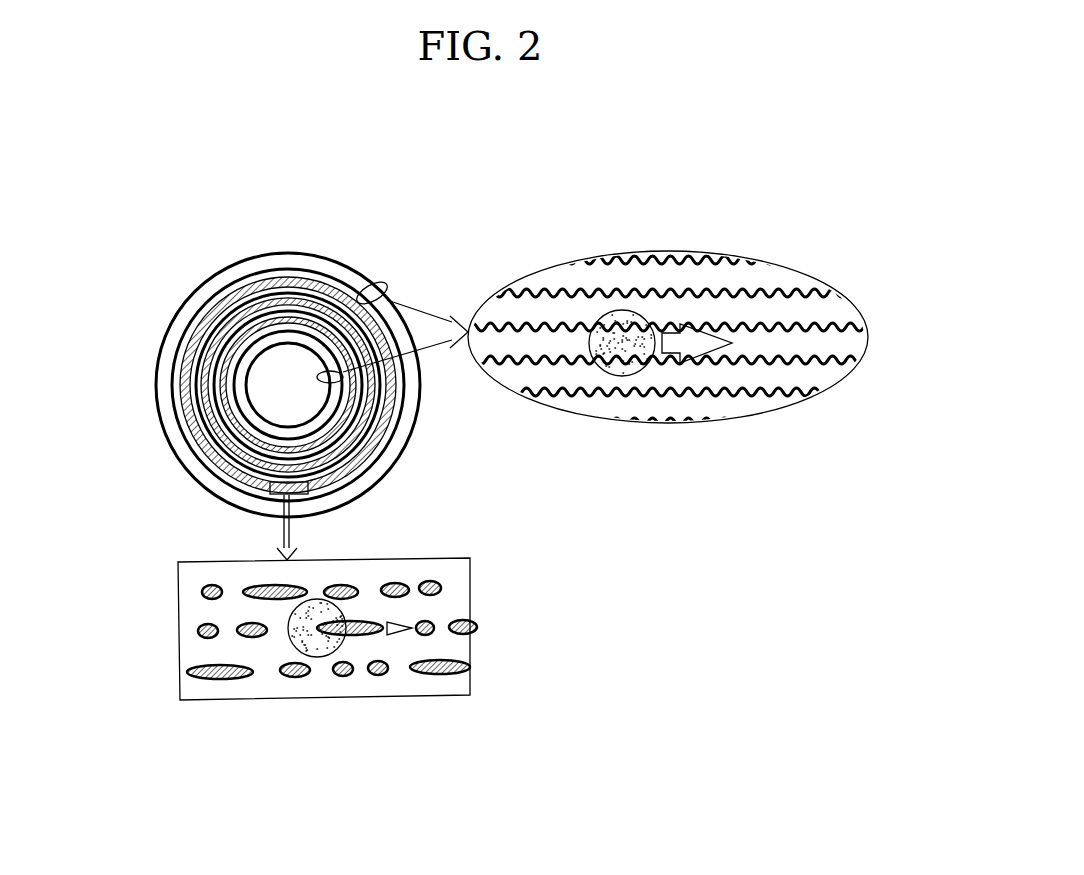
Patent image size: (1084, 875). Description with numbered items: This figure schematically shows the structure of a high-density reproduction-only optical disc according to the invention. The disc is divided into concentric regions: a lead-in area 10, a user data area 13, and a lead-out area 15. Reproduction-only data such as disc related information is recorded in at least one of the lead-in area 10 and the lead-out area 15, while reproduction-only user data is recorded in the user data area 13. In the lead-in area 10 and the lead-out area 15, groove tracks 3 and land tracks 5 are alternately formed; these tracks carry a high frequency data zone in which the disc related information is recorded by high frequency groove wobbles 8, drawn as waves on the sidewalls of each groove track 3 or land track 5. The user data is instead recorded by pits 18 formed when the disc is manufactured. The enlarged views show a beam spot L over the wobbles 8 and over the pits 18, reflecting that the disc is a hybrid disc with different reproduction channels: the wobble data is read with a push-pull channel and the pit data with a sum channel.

The lead-in area 10 is at (289, 333).
The user data area 13 is at (164, 371).
The lead-out area 15 is at (248, 267).
The groove tracks 3 is at (790, 273).
The land tracks 5 is at (838, 302).
The high frequency groove wobbles 8 is at (692, 285).
The pits 18 is at (467, 632).
The laser beam spot L is at (618, 312).